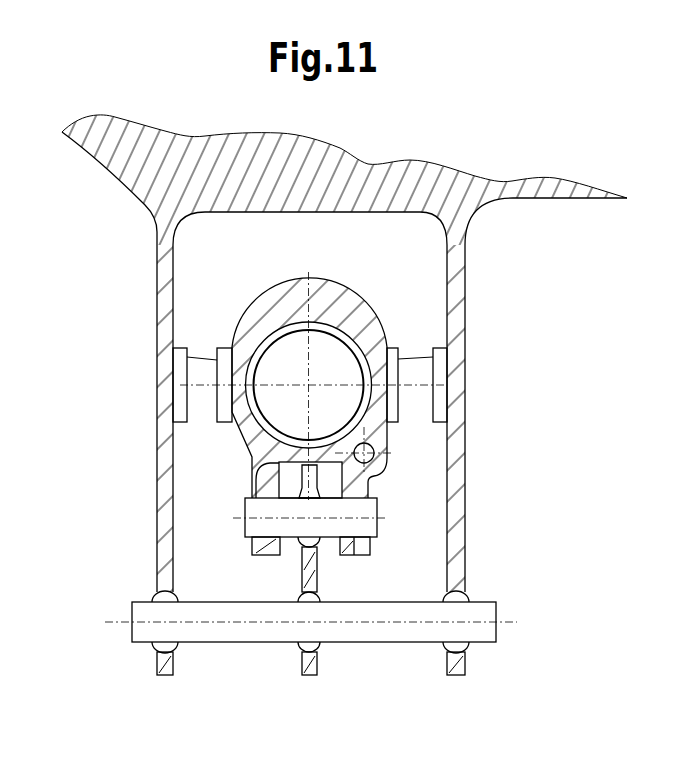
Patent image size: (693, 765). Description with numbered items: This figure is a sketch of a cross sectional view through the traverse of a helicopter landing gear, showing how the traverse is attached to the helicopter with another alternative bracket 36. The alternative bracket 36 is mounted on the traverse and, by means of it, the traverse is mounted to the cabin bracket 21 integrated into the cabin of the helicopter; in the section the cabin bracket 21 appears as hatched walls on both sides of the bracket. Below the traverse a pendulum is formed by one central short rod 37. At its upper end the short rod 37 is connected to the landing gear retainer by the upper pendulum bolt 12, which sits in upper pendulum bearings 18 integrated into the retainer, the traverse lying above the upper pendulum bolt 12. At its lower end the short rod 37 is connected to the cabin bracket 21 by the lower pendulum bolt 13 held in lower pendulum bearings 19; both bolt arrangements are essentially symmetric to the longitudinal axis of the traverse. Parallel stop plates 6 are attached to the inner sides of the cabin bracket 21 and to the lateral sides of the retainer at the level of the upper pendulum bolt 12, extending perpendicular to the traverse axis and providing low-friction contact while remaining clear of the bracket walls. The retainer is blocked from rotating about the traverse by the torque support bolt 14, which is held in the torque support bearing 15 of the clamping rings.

The cabin bracket 21 is at (163, 293).
The alternative bracket 36 is at (382, 288).
The stop plate 6 is at (178, 375).
The torque support bolt 14 is at (374, 448).
The torque support bearing 15 is at (363, 449).
The upper pendulum bearing 18 is at (252, 468).
The upper pendulum bolt 12 is at (369, 503).
The central short rod 37 is at (302, 563).
The lower pendulum bolt 13 is at (488, 612).
The lower pendulum bearing 19 is at (175, 647).